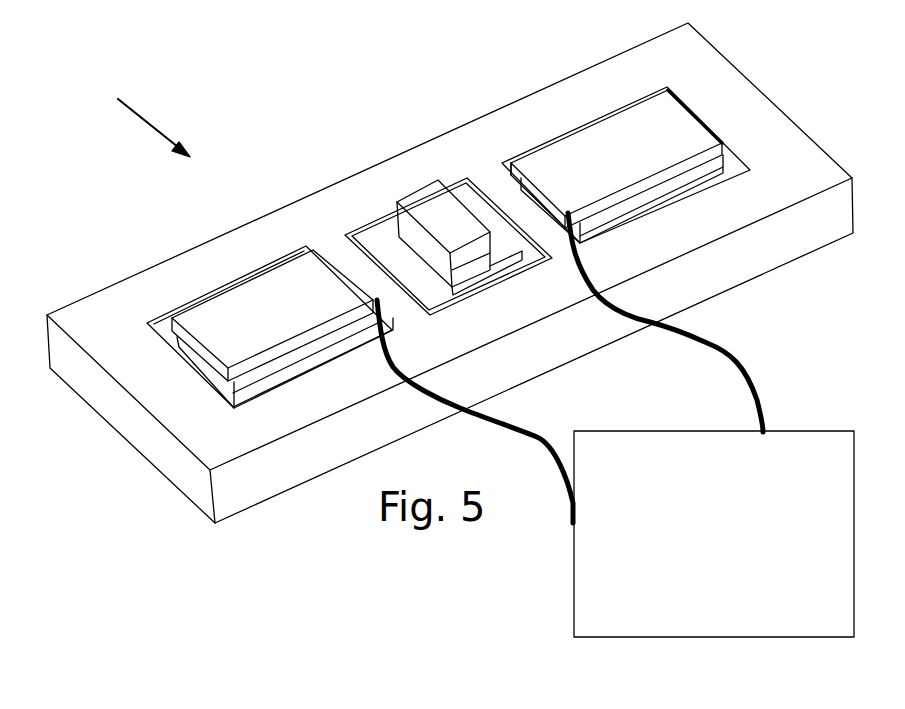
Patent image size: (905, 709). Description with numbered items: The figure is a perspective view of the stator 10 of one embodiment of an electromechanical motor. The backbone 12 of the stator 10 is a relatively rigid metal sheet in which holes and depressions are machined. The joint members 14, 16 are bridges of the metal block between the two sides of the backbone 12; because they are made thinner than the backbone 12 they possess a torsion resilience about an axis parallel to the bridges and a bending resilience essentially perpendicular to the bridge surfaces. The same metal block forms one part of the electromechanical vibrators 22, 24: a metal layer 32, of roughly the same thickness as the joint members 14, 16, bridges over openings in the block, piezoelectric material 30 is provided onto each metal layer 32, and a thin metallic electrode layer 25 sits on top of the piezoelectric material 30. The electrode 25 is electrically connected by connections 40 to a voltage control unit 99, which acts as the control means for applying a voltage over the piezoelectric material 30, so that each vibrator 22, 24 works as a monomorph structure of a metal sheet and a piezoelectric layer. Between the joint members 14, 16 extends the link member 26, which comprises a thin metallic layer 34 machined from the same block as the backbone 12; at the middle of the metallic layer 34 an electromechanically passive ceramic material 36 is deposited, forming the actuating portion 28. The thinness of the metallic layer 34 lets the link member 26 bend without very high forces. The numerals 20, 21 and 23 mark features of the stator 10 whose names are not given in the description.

The stator 10 is at (142, 115).
The backbone 12 is at (810, 155).
The joint member 14 is at (398, 302).
The joint member 16 is at (503, 188).
The left recess 20 is at (313, 250).
The recess inner wall 21 is at (348, 267).
The electromechanical vibrator 22 is at (320, 267).
The chip edge 23 is at (517, 168).
The electromechanical vibrator 24 is at (577, 163).
The electrode layer 25 is at (235, 320).
The link member 26 is at (383, 258).
The actuating portion 28 is at (410, 197).
The piezoelectric material 30 is at (240, 370).
The metal layer 32 is at (287, 360).
The metallic layer 34 is at (467, 270).
The ceramic material 36 is at (488, 247).
The connections 40 is at (745, 367).
The voltage control unit 99 is at (580, 575).